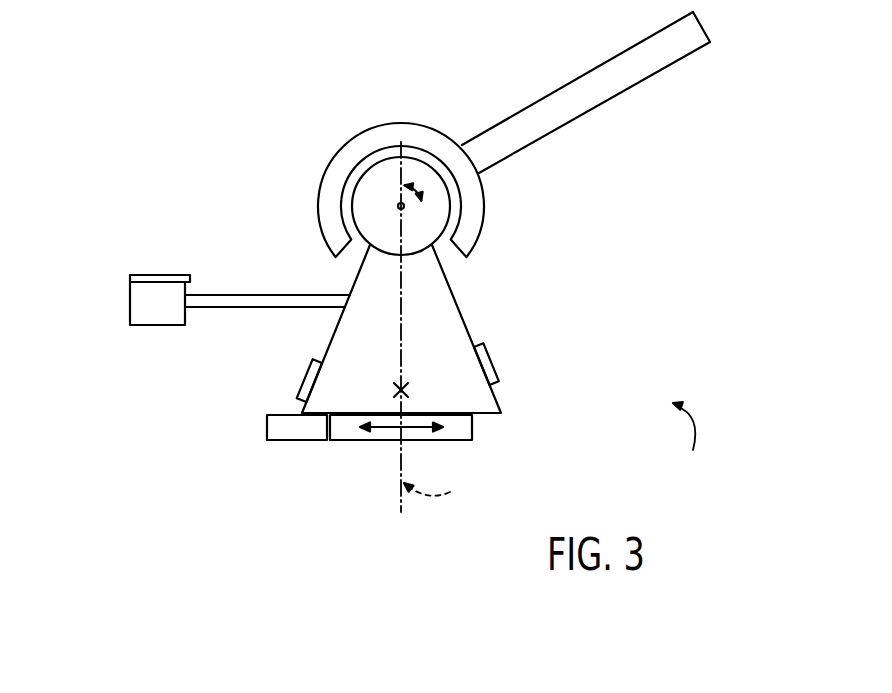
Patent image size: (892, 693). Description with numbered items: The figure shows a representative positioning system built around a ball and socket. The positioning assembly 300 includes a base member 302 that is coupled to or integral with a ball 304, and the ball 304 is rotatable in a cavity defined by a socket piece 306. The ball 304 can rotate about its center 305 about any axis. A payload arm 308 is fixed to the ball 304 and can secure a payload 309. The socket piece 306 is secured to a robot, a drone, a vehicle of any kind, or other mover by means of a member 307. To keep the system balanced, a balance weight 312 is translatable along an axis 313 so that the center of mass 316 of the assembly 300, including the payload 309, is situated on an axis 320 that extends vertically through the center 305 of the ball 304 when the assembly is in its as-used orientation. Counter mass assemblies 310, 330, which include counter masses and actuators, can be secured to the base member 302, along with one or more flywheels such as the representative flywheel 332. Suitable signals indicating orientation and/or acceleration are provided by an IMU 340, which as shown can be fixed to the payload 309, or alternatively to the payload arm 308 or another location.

The positioning assembly 300 is at (693, 442).
The base member 302 is at (493, 392).
The ball 304 is at (430, 210).
The center 305 is at (398, 203).
The socket piece 306 is at (375, 140).
The member 307 is at (552, 108).
The payload arm 308 is at (265, 295).
The payload 309 is at (162, 324).
The counter mass assembly 310 is at (290, 440).
The balance weight 312 is at (345, 442).
The axis 313 is at (383, 430).
The center of mass 316 is at (397, 392).
The axis 320 is at (450, 327).
The counter mass assembly 330 is at (305, 370).
The flywheel 332 is at (493, 367).
The IMU 340 is at (160, 274).